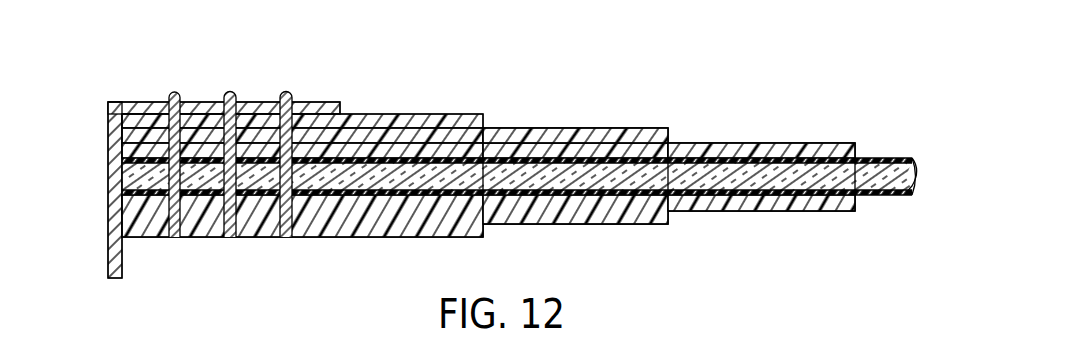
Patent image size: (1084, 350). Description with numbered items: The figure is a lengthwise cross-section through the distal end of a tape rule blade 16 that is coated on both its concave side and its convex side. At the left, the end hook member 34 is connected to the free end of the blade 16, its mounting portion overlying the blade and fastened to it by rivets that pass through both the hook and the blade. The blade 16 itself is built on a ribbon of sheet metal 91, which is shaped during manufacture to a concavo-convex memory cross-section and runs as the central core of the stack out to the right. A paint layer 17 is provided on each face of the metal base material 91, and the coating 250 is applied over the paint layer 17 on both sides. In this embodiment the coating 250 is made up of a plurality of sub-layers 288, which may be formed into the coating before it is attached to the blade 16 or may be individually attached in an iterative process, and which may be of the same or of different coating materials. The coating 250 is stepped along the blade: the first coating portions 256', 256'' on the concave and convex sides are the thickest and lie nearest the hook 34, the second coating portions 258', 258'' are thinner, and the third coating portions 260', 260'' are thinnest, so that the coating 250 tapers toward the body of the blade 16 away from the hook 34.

The end hook member 34 is at (108, 153).
The elongated blade 16 is at (200, 178).
The coating 250 is at (353, 114).
The first coating portion on the concave side 256' is at (302, 91).
The first coating portion on the convex side 256'' is at (302, 251).
The sub-layers 288 is at (435, 113).
The second coating portion on the concave side 258' is at (575, 102).
The second coating portion on the convex side 258'' is at (575, 238).
The third coating portion on the concave side 260' is at (761, 118).
The third coating portion on the convex side 260'' is at (761, 234).
The sheet metal 91 is at (823, 170).
The paint layer 17 is at (707, 155).